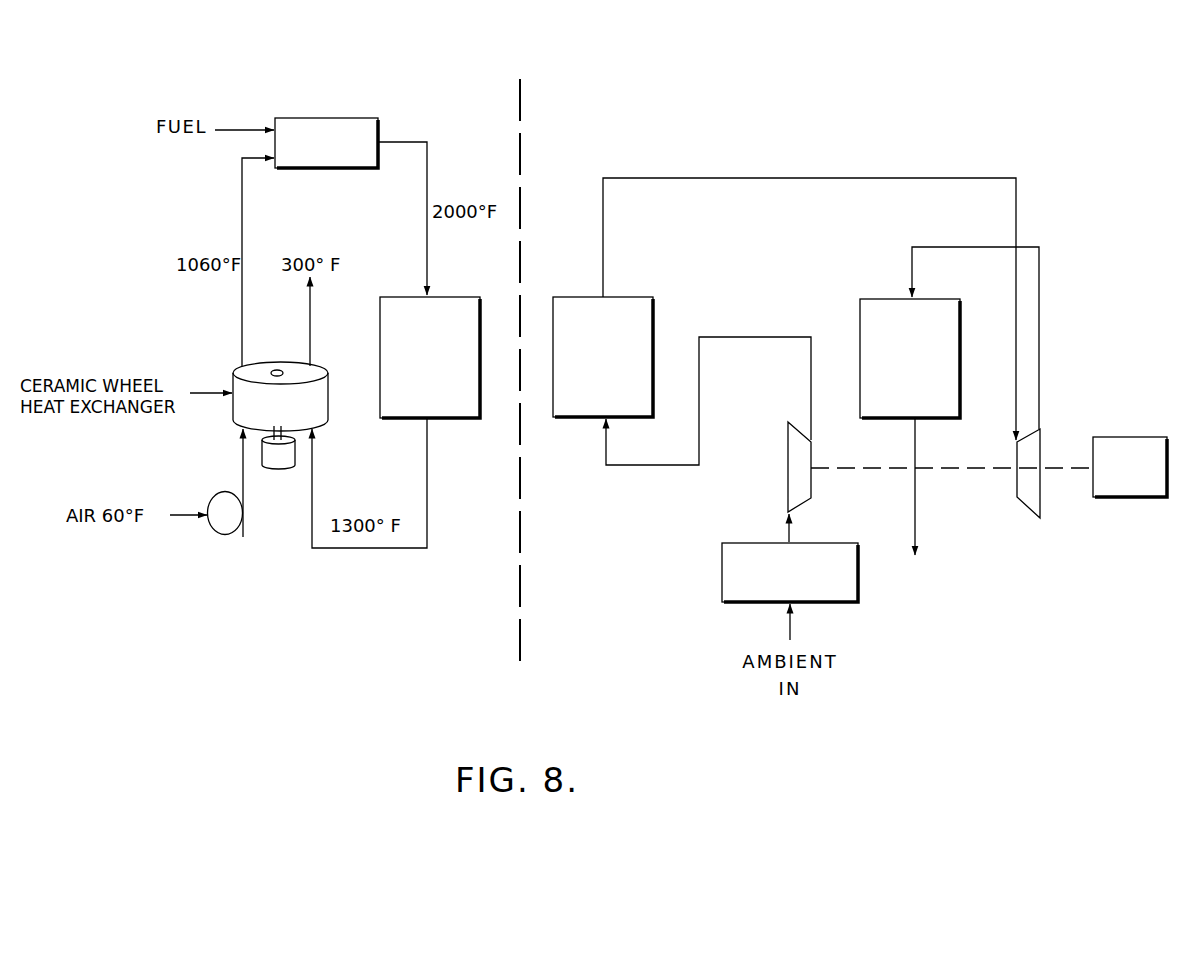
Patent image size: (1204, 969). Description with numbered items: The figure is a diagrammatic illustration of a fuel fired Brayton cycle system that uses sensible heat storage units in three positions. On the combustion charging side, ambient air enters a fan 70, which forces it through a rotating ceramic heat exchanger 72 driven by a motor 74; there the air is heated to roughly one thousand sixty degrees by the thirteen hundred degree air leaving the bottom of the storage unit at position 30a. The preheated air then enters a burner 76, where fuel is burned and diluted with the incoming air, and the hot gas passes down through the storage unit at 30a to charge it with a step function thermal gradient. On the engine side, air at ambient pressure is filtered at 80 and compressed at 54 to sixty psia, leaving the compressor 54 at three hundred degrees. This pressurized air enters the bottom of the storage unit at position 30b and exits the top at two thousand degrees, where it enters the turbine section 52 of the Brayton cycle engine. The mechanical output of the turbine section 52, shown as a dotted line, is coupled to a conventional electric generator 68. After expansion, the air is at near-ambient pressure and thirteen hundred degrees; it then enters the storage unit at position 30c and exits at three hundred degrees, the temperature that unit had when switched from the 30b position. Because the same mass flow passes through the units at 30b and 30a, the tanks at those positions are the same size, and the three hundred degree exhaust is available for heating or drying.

The burner 76 is at (343, 118).
The sensible heat storage unit position 30a is at (460, 297).
The sensible heat storage unit position 30b is at (622, 297).
The sensible heat storage unit position 30c is at (935, 299).
The rotating ceramic heat exchanger 72 is at (328, 398).
The motor 74 is at (275, 469).
The fan 70 is at (236, 531).
The compressor 54 is at (809, 500).
The turbine section 52 is at (1058, 506).
The electric generator 68 is at (1143, 437).
The filter 80 is at (840, 543).